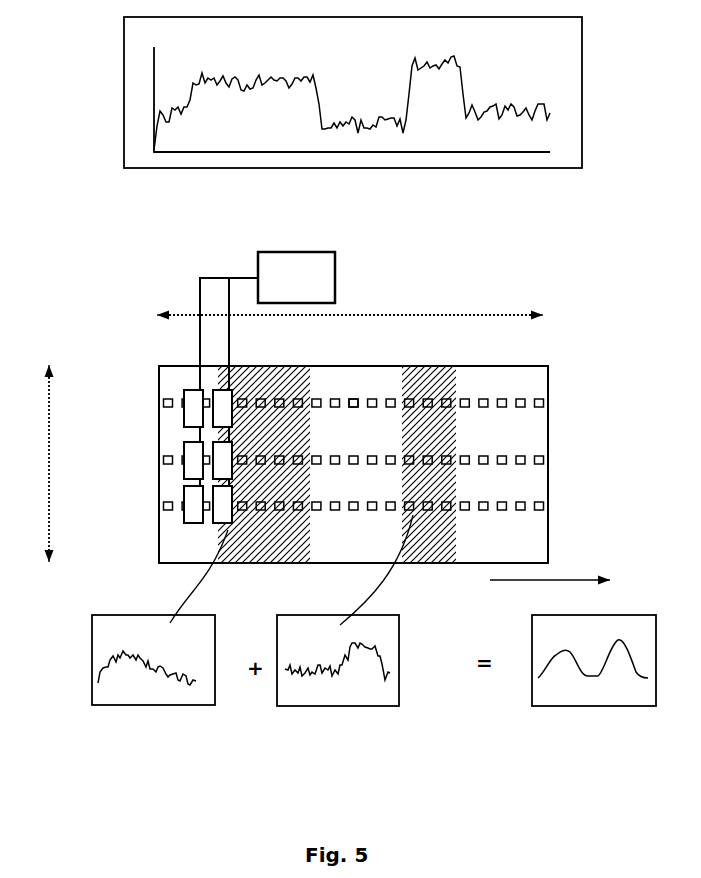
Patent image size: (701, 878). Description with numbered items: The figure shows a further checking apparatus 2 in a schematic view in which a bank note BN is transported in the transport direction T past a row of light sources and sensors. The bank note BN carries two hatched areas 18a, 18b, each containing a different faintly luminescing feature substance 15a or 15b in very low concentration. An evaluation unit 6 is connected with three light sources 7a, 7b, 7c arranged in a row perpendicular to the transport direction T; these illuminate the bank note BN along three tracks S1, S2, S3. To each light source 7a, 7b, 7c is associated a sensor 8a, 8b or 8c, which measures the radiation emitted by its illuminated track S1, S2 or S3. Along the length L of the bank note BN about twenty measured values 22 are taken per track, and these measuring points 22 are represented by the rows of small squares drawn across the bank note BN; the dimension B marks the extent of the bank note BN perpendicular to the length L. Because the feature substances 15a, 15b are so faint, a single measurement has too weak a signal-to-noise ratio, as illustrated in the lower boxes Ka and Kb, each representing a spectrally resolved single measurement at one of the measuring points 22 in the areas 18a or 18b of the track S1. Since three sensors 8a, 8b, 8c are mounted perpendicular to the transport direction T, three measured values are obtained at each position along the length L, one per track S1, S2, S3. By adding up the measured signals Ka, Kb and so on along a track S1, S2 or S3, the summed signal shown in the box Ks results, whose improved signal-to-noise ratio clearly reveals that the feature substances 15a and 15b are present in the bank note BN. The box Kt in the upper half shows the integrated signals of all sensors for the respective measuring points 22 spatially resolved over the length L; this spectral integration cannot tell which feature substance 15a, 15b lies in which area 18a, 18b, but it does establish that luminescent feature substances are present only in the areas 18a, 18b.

The checking apparatus 2 is at (135, 270).
The evaluation unit 6 is at (293, 260).
The light source 7a is at (195, 408).
The light source 7b is at (197, 458).
The light source 7c is at (185, 494).
The sensor 8a is at (228, 403).
The sensor 8b is at (225, 462).
The sensor 8c is at (207, 513).
The feature substance 15a is at (283, 545).
The feature substance 15b is at (625, 718).
The hatched area 18a is at (244, 95).
The hatched area 18b is at (432, 95).
The measured values 22 is at (353, 395).
The box of integrated signals Kt is at (370, 93).
The box of single measuring Ka is at (170, 625).
The box of single measuring Kb is at (356, 617).
The box of summed signal Ks is at (612, 667).
The bank note BN is at (552, 380).
The track S1 is at (524, 506).
The track S2 is at (523, 458).
The track S3 is at (523, 412).
The length L is at (350, 290).
The width B is at (32, 463).
The transport direction T is at (550, 592).